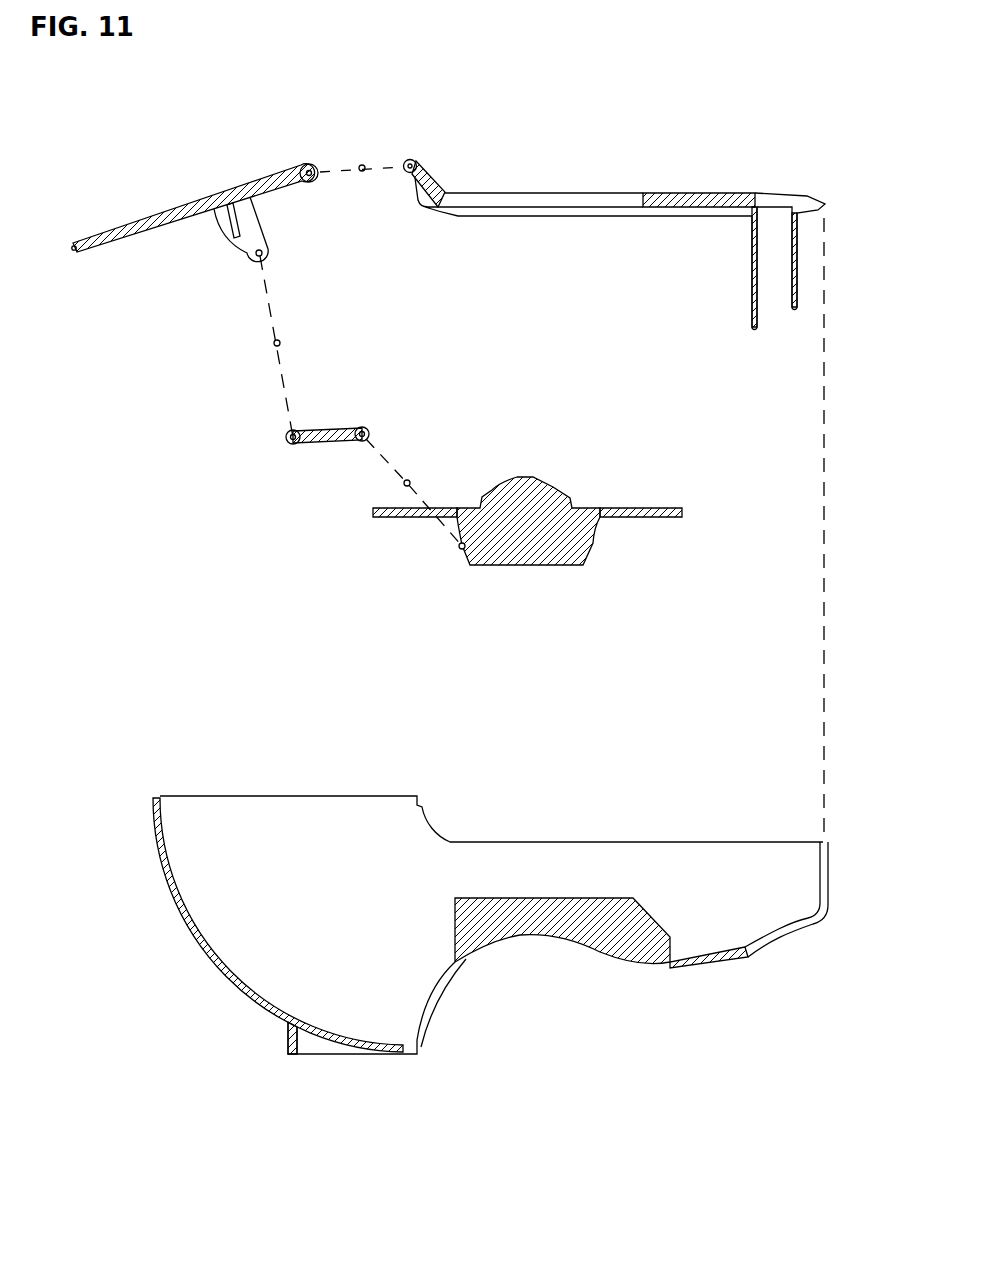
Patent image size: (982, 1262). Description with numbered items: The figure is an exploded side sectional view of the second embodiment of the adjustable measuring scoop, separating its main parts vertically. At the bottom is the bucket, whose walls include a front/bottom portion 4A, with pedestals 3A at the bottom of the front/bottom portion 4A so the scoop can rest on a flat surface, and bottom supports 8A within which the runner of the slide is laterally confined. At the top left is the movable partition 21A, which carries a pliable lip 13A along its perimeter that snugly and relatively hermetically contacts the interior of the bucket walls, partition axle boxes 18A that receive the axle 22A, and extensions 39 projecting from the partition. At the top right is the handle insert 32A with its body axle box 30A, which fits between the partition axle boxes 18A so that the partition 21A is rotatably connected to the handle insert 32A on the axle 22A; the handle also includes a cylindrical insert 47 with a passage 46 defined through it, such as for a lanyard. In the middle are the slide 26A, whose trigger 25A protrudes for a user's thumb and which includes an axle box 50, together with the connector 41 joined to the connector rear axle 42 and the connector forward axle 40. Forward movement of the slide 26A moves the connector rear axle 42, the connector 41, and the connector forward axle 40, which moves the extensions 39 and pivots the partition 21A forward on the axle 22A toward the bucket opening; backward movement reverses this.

The pedestal 3A is at (310, 1042).
The front/bottom portion 4A is at (222, 973).
The bottom support 8A is at (583, 922).
The lip 13A is at (73, 247).
The partition axle box 18A is at (307, 166).
The movable partition 21A is at (200, 200).
The axle 22A is at (363, 165).
The trigger 25A is at (540, 490).
The slide 26A is at (667, 506).
The body axle box 30A is at (415, 160).
The handle insert 32A is at (710, 190).
The extension 39 is at (243, 250).
The connector forward axle 40 is at (274, 346).
The connector 41 is at (303, 442).
The connector rear axle 42 is at (410, 483).
The passage 46 is at (787, 195).
The cylindrical insert 47 is at (750, 297).
The axle box 50 is at (460, 548).